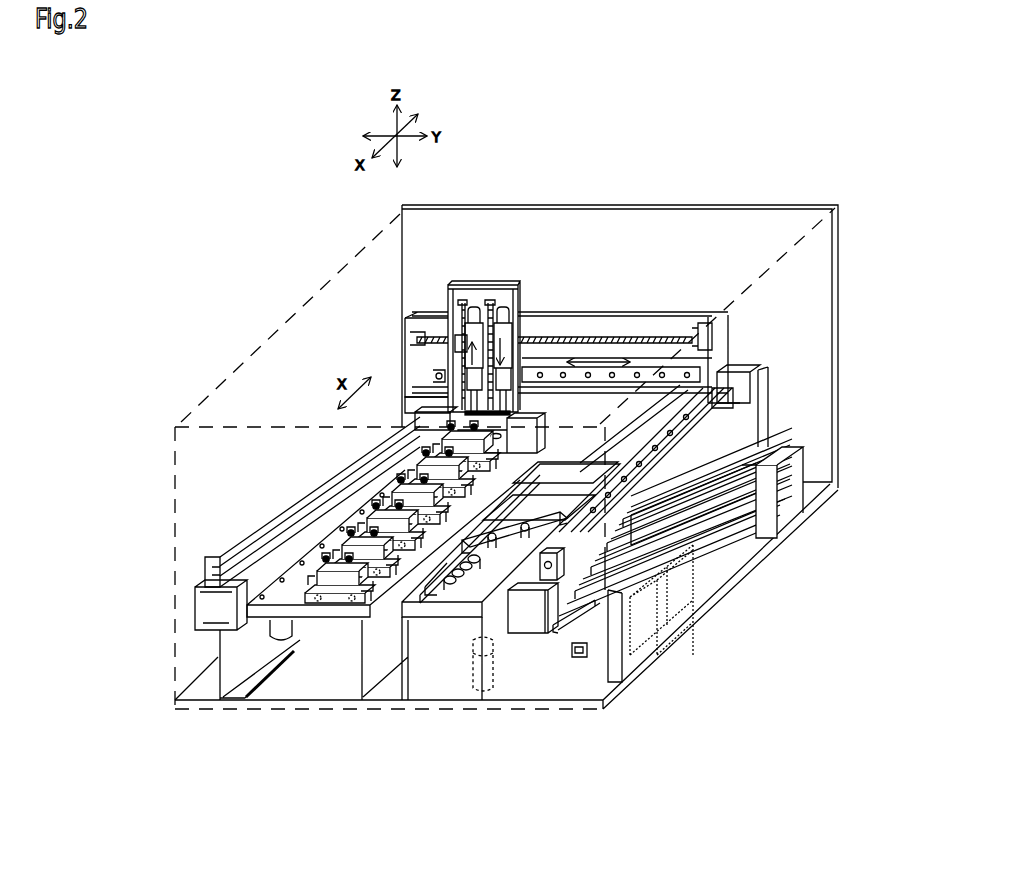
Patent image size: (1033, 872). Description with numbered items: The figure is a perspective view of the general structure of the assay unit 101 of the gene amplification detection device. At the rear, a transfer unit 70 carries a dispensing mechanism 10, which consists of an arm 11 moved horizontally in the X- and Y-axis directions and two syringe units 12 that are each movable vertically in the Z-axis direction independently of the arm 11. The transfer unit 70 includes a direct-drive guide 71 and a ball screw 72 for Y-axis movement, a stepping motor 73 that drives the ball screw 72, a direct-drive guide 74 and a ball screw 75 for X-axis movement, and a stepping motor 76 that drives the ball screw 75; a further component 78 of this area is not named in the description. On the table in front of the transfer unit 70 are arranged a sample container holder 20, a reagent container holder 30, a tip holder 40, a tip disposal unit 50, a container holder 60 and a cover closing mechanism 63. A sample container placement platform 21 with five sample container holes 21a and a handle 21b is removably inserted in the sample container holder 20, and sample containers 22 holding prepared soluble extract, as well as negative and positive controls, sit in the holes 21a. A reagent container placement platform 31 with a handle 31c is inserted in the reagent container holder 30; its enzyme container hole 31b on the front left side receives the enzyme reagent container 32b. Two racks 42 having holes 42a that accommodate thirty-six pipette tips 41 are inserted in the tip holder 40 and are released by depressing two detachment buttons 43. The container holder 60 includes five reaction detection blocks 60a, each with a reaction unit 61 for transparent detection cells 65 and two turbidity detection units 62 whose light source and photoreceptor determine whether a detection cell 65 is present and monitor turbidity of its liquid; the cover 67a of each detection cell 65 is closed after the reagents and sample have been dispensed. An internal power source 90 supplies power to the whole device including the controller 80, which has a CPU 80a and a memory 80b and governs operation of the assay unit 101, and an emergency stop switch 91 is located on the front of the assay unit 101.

The assay unit 101 is at (689, 184).
The dispensing mechanism 10 is at (508, 276).
The arm 11 is at (521, 300).
The syringe unit 12 is at (507, 340).
The ball screw 72 is at (626, 336).
The direct-drive guide 71 is at (650, 368).
The stepping motor 73 is at (701, 330).
The transfer unit 70 is at (737, 331).
The stepping motor 76 is at (729, 378).
The slider 78 is at (738, 401).
The direct-drive guide 74 is at (712, 421).
The ball screw 75 is at (717, 440).
The pipette tip 41 is at (465, 400).
The tip disposal unit 50 is at (503, 422).
The cover closing mechanism 63 is at (425, 450).
The reaction detection block 60a is at (418, 456).
The cover 67a is at (325, 557).
The turbidity detection unit 62 is at (318, 597).
The detection cell 65 is at (283, 640).
The reaction unit 61 is at (333, 598).
The container holder 60 is at (356, 588).
The sample container hole 21a is at (416, 604).
The sample container 22 is at (449, 577).
The sample container holder 20 is at (456, 606).
The sample container placement platform 21 is at (470, 587).
The handle 21b is at (520, 558).
The reagent container placement platform 31 is at (526, 602).
The reagent container holder 30 is at (548, 582).
The handle 31c is at (580, 658).
The emergency stop switch 91 is at (600, 622).
The internal power source 90 is at (783, 497).
The hole 42a is at (747, 500).
The detachment button 43 is at (718, 526).
The rack 42 is at (704, 540).
The tip holder 40 is at (654, 581).
The enzyme reagent container 32b is at (642, 596).
The memory 80b is at (794, 652).
The enzyme container hole 31b is at (635, 615).
The CPU 80a is at (644, 647).
The controller 80 is at (632, 668).